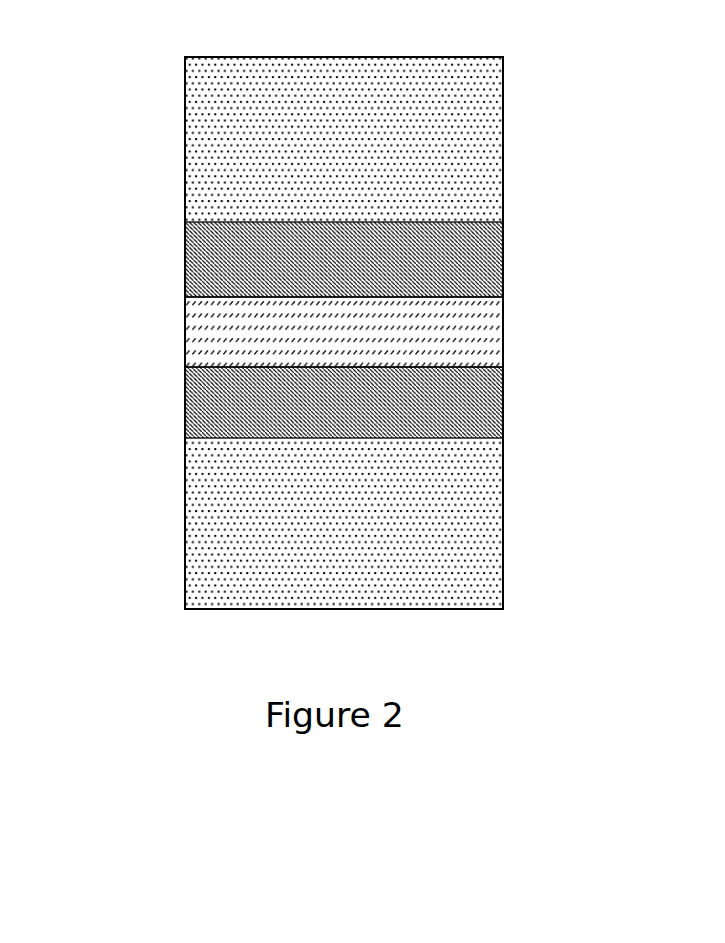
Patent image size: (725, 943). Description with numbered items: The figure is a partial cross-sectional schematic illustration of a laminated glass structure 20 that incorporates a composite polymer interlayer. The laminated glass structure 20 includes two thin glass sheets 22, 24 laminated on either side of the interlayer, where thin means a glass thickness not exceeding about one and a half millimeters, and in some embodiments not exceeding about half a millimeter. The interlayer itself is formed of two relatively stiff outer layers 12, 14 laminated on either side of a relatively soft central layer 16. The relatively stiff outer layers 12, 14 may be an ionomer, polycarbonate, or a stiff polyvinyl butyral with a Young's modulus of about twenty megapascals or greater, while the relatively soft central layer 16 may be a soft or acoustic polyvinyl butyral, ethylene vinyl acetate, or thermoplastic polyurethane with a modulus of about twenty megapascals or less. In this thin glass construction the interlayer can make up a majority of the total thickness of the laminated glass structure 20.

The laminated glass structure 20 is at (455, 323).
The thin glass sheet 22 is at (492, 163).
The relatively stiff outer layer 12 is at (490, 260).
The relatively soft central layer 16 is at (492, 327).
The relatively stiff outer layer 14 is at (495, 413).
The thin glass sheet 24 is at (478, 542).